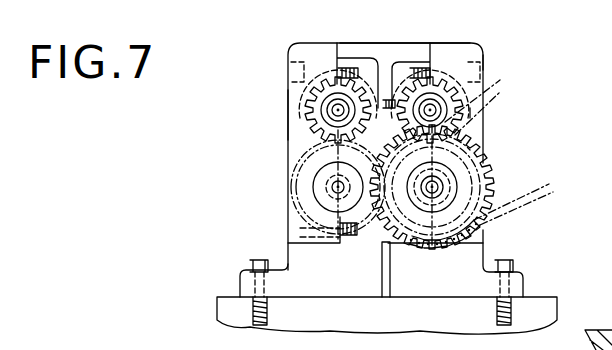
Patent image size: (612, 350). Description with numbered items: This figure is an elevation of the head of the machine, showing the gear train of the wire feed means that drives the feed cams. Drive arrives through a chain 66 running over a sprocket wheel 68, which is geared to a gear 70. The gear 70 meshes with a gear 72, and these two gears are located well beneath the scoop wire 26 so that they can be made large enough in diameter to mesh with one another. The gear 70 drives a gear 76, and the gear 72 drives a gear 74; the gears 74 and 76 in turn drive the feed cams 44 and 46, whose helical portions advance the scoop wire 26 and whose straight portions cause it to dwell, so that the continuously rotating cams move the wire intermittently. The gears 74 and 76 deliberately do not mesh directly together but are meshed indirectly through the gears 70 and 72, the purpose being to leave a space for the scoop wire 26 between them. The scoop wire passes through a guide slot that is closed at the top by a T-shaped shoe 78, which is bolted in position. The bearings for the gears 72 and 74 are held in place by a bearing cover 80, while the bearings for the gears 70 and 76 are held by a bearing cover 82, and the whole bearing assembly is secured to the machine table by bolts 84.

The scoop wire 26 is at (390, 98).
The feed cam 44 is at (300, 117).
The feed cam 46 is at (471, 113).
The chain 66 is at (545, 200).
The sprocket wheel 68 is at (490, 178).
The gear 70 is at (462, 143).
The gear 72 is at (323, 142).
The gear 74 is at (308, 100).
The gear 76 is at (398, 104).
The T-shaped shoe 78 is at (352, 47).
The bearing cover 80 is at (290, 51).
The bearing cover 82 is at (481, 48).
The bolts 84 is at (251, 261).